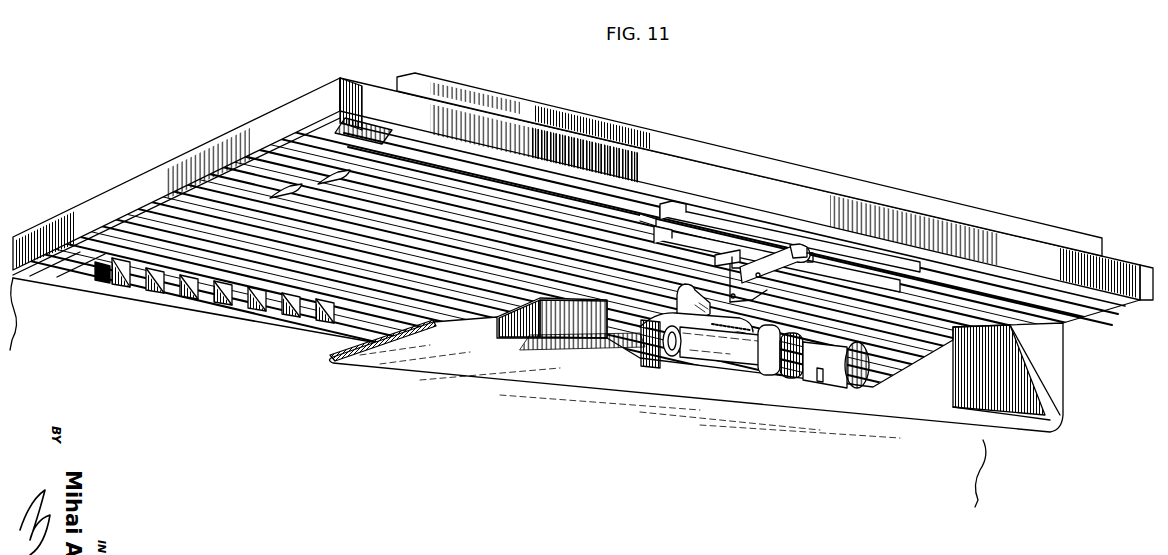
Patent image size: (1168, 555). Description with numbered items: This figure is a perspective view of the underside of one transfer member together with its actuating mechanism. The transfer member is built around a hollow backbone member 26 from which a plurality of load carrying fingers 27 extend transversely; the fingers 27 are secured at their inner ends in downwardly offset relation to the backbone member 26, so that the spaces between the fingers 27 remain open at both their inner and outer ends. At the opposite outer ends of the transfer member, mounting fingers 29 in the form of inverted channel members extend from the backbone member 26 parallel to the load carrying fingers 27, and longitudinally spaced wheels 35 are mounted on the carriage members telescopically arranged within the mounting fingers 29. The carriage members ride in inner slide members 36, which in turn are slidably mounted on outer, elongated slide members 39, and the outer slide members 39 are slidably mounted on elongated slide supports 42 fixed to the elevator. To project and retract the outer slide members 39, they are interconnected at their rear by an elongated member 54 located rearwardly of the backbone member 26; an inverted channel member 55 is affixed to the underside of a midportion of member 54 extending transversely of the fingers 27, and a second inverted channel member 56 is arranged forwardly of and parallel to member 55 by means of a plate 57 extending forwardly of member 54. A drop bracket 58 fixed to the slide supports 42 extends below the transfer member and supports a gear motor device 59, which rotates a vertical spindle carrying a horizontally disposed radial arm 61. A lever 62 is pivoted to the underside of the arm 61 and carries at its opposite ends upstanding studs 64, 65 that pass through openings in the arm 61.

The hollow backbone member 26 is at (553, 117).
The load carrying fingers 27 is at (470, 287).
The mounting fingers 29 is at (358, 165).
The wheels 35 is at (300, 194).
The inner slide members 36 is at (67, 268).
The outer slide members 39 is at (43, 268).
The slide supports 42 is at (120, 197).
The elongated member 54 is at (788, 237).
The inverted channel member 55 is at (686, 205).
The second inverted channel member 56 is at (660, 244).
The plate 57 is at (655, 218).
The drop bracket 58 is at (843, 412).
The gear motor device 59 is at (665, 340).
The radial arm 61 is at (680, 287).
The lever 62 is at (780, 263).
The upstanding stud 64 is at (703, 238).
The upstanding stud 65 is at (718, 259).